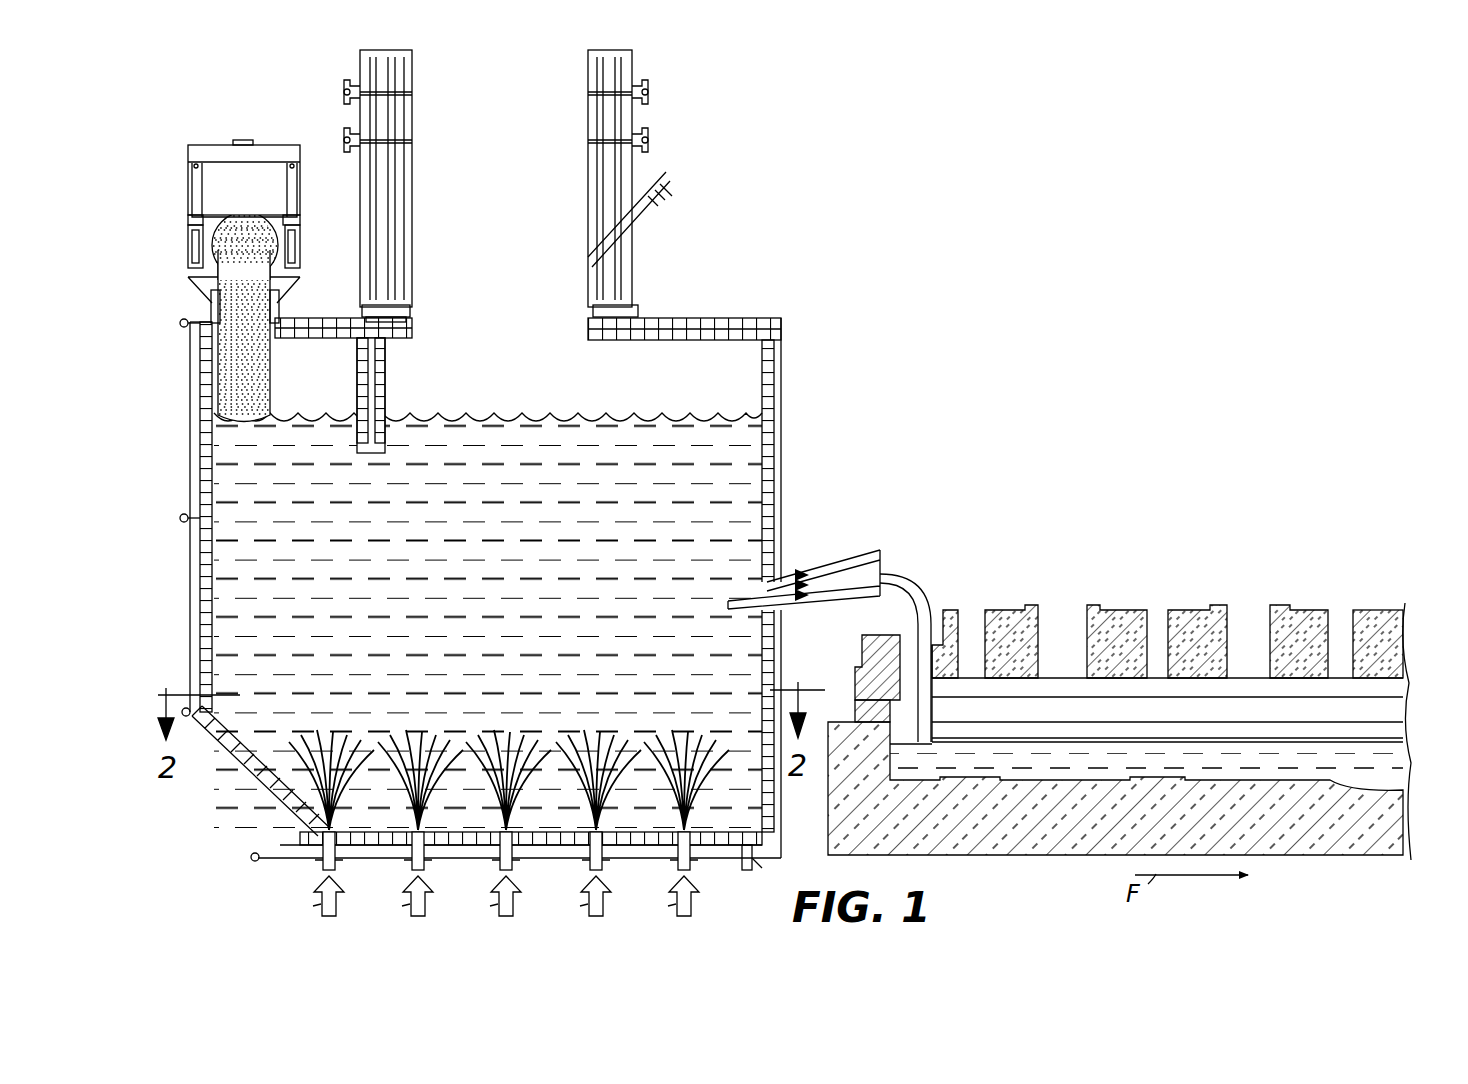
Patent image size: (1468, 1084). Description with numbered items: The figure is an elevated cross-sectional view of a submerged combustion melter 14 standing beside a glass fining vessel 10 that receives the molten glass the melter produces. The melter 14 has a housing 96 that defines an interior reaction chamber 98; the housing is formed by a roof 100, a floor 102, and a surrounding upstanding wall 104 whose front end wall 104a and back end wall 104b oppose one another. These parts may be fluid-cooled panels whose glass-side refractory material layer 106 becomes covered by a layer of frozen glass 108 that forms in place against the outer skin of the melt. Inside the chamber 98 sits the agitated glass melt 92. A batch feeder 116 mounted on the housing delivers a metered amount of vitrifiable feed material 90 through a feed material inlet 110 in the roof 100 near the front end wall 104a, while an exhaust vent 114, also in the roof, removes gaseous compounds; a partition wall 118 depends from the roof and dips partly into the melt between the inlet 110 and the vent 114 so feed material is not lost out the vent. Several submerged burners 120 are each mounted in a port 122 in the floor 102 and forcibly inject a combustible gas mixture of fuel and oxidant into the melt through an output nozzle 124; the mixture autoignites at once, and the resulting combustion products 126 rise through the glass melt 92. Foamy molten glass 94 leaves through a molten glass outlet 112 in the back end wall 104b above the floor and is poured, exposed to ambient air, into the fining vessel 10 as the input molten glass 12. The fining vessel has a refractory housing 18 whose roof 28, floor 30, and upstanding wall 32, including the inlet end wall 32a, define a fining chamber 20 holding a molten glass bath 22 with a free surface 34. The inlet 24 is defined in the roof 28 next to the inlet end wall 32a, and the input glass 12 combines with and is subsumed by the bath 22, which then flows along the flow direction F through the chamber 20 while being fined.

The glass fining vessel 10 is at (1107, 572).
The input molten glass 12 is at (912, 575).
The submerged combustion melter 14 is at (802, 268).
The housing 18 is at (857, 650).
The fining chamber 20 is at (1388, 688).
The molten glass bath 22 is at (965, 758).
The inlet 24 is at (920, 652).
The roof 28 is at (1300, 614).
The floor 30 is at (1004, 845).
The upstanding wall 32 is at (842, 780).
The inlet end wall 32a is at (846, 742).
The surface 34 is at (1078, 742).
The vitrifiable feed material 90 is at (212, 240).
The glass melt 92 is at (488, 621).
The foamy molten glass 94 is at (748, 614).
The housing 96 is at (197, 378).
The interior reaction chamber 98 is at (210, 463).
The roof 100 is at (667, 320).
The floor 102 is at (456, 848).
The surrounding upstanding wall 104 is at (187, 585).
The front end wall 104a is at (198, 553).
The back end wall 104b is at (786, 452).
The glass-side refractory material layer 106 is at (205, 605).
The layer of frozen glass 108 is at (218, 634).
The feed material inlet 110 is at (262, 340).
The molten glass outlet 112 is at (785, 574).
The exhaust vent 114 is at (410, 326).
The batch feeder 116 is at (207, 187).
The partition wall 118 is at (378, 396).
The submerged burners 120 is at (680, 857).
The port 122 is at (328, 856).
The output nozzle 124 is at (328, 836).
The combustion products 126 is at (516, 780).